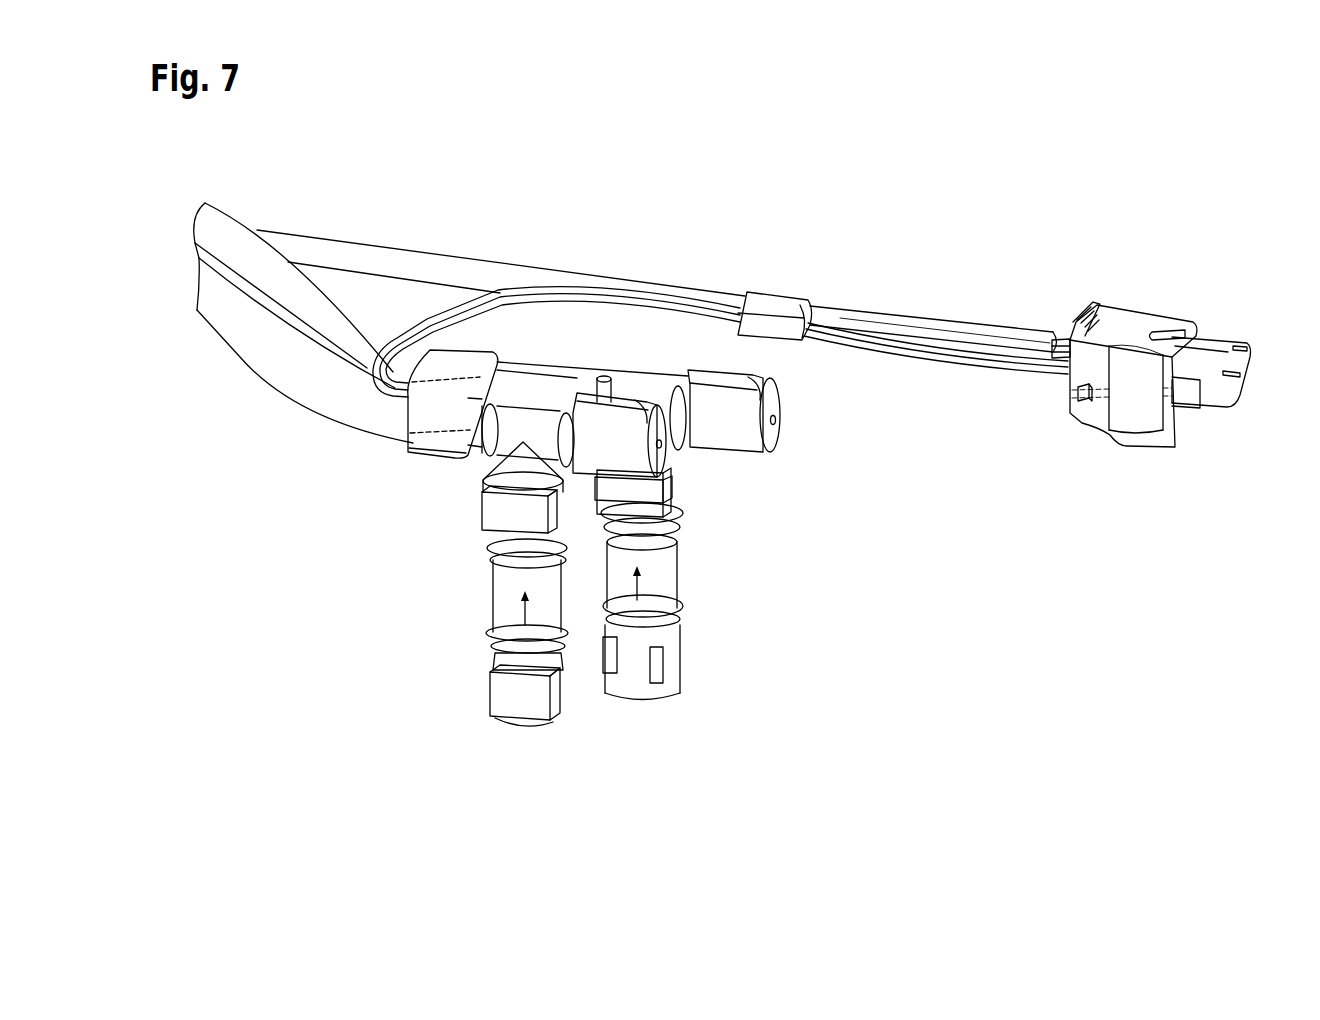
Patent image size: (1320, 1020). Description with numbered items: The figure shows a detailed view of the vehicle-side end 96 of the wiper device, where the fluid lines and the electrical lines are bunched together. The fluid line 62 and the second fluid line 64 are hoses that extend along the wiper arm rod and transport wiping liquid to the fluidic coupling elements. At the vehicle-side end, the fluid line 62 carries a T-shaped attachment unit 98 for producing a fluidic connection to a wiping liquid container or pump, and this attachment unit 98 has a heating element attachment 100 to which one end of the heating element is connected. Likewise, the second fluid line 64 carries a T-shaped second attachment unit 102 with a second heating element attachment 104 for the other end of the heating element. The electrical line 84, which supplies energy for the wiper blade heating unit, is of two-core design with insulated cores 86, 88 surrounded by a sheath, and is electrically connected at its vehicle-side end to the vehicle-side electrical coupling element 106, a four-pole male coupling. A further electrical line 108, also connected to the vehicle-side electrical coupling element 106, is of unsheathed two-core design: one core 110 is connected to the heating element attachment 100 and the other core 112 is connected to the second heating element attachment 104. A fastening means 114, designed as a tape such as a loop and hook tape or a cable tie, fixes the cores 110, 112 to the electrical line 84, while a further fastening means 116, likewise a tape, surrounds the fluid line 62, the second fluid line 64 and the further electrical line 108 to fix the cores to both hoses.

The fluid line 62 is at (231, 228).
The second fluid line 64 is at (278, 378).
The electrical line 84 is at (463, 272).
The core 86 is at (1064, 339).
The core 88 is at (1062, 382).
The vehicle-side end 96 is at (340, 660).
The attachment unit 98 is at (638, 712).
The heating element attachment 100 is at (734, 438).
The second attachment unit 102 is at (518, 734).
The second heating element attachment 104 is at (627, 460).
The vehicle-side electrical coupling element 106 is at (1124, 455).
The further electrical line 108 is at (430, 302).
The core 110 is at (973, 370).
The core 112 is at (887, 318).
The fastening means 114 is at (779, 300).
The further fastening means 116 is at (433, 430).